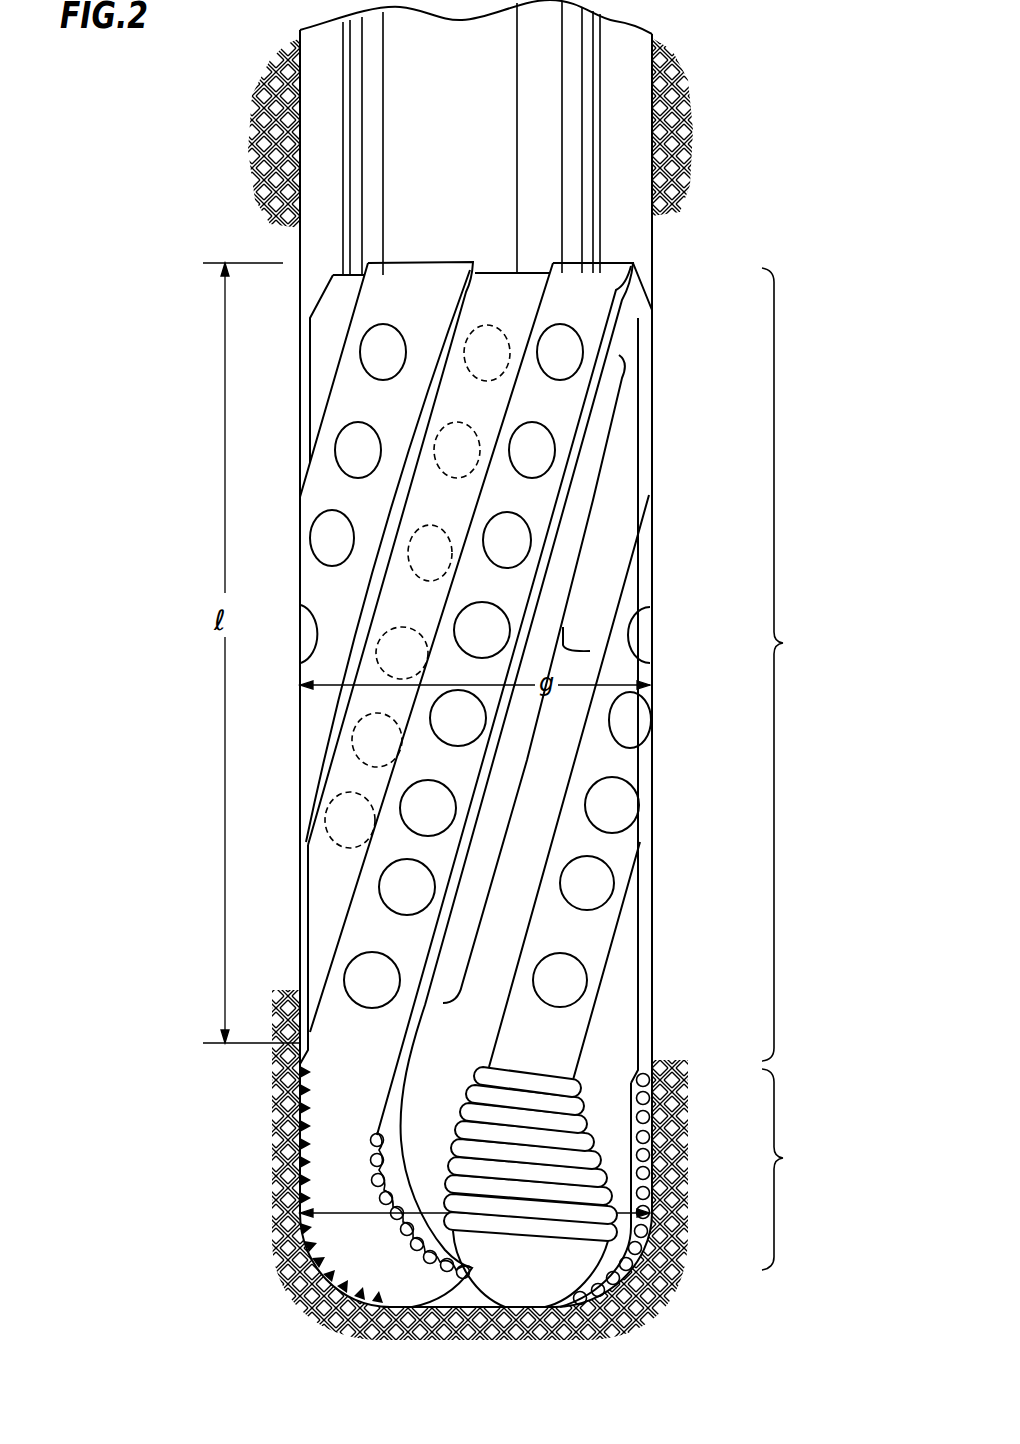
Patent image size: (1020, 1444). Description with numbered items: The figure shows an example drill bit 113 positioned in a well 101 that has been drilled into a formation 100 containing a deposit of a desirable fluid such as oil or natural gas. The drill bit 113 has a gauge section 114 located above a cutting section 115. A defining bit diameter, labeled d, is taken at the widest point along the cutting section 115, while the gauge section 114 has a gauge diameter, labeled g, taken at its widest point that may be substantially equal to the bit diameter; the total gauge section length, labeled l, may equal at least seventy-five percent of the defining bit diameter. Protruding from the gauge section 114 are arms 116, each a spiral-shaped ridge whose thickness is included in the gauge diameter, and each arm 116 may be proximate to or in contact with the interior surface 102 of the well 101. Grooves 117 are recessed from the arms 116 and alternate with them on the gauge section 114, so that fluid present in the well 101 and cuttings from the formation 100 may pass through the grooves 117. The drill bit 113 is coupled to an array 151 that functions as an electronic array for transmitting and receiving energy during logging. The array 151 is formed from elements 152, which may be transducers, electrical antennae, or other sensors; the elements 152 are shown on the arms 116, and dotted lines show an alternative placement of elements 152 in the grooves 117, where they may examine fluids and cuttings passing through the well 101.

The formation 100 is at (143, 770).
The well 101 is at (312, 148).
The interior surface 102 is at (640, 182).
The drill bit 113 is at (640, 918).
The gauge section 114 is at (783, 643).
The cutting section 115 is at (783, 1158).
The arm 116 is at (550, 308).
The groove 117 is at (532, 823).
The array 151 is at (590, 651).
The elements 152 is at (340, 450).